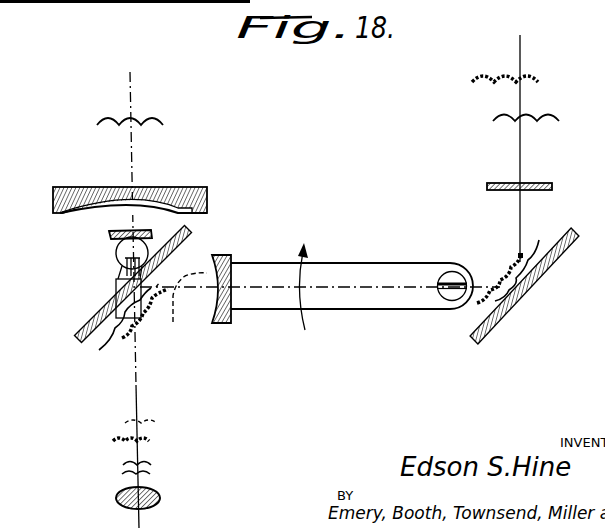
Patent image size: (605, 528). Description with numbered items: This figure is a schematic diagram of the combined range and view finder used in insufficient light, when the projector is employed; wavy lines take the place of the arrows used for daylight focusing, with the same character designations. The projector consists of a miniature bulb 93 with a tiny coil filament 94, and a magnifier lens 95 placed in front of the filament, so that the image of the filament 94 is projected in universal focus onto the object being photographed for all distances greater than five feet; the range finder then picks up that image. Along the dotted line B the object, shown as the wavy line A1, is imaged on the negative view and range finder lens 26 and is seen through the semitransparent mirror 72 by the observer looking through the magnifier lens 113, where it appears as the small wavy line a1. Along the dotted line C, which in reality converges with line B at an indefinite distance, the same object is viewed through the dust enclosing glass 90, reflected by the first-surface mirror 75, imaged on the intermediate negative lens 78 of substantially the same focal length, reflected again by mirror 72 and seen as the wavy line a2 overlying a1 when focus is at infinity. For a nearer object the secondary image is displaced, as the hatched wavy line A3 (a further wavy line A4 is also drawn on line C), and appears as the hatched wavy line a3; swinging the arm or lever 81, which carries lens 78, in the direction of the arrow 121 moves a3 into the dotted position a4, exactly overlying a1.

The view and range finder lens 26 is at (202, 191).
The magnifier lens 95 is at (110, 234).
The miniature bulb 93 is at (117, 252).
The coil filament 94 is at (119, 271).
The semitransparent mirror 72 is at (110, 321).
The intermediate negative lens 78 is at (229, 323).
The arm or lever 81 is at (351, 298).
The arrow 121 is at (306, 256).
The first-surface mirror 75 is at (552, 263).
The piece of glass 90 is at (540, 183).
The magnifier lens 113 is at (153, 497).
The dotted line B is at (130, 87).
The dotted line C is at (520, 64).
The wavy line A' A1 is at (150, 118).
The wavy line A3 is at (528, 81).
The wavefront A4 is at (556, 118).
The wavy line a' a1 is at (150, 474).
The wavy line a2 is at (99, 351).
The wavy line a3 is at (122, 342).
The wavy line a4 is at (174, 324).